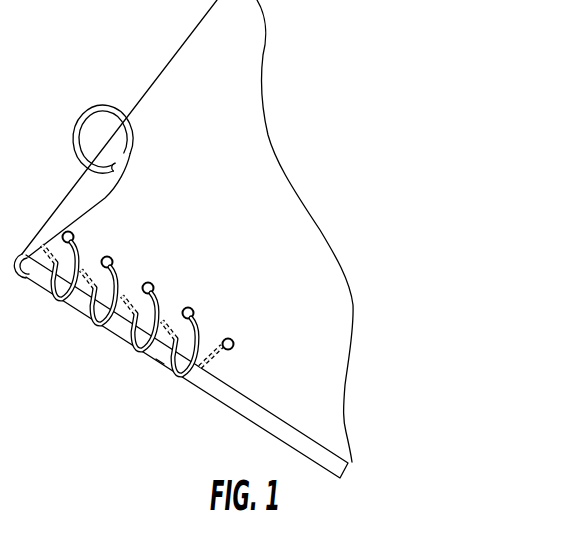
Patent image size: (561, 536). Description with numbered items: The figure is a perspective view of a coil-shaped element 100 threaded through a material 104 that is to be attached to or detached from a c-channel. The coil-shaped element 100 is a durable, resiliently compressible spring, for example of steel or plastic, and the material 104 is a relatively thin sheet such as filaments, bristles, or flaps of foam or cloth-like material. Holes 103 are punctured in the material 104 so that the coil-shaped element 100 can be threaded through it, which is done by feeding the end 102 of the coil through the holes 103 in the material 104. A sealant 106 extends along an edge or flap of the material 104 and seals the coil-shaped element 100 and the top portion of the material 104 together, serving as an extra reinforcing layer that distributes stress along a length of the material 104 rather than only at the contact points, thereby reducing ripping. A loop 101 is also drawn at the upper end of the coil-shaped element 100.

The coil-shaped element 100 is at (95, 205).
The wire loop eye 101 is at (126, 146).
The end 102 is at (233, 349).
The holes 103 is at (152, 284).
The material 104 is at (258, 222).
The sealant 106 is at (160, 362).